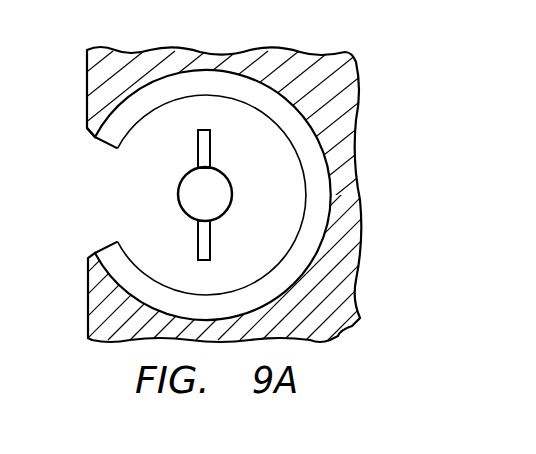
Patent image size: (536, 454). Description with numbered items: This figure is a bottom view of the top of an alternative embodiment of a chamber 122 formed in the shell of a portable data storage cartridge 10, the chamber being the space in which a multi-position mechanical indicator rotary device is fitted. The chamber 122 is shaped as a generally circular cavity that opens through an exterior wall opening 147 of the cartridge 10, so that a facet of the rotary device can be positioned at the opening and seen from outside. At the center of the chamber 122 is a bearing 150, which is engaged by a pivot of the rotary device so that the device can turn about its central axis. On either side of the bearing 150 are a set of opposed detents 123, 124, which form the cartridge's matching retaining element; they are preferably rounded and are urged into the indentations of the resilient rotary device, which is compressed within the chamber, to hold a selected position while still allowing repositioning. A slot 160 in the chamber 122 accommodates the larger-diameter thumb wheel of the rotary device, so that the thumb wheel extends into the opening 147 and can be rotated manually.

The portable data storage cartridge 10 is at (378, 141).
The chamber 122 is at (171, 82).
The detent 123 is at (198, 157).
The detent 124 is at (198, 238).
The exterior wall opening 147 is at (97, 140).
The bearing 150 is at (175, 191).
The slot 160 is at (337, 187).